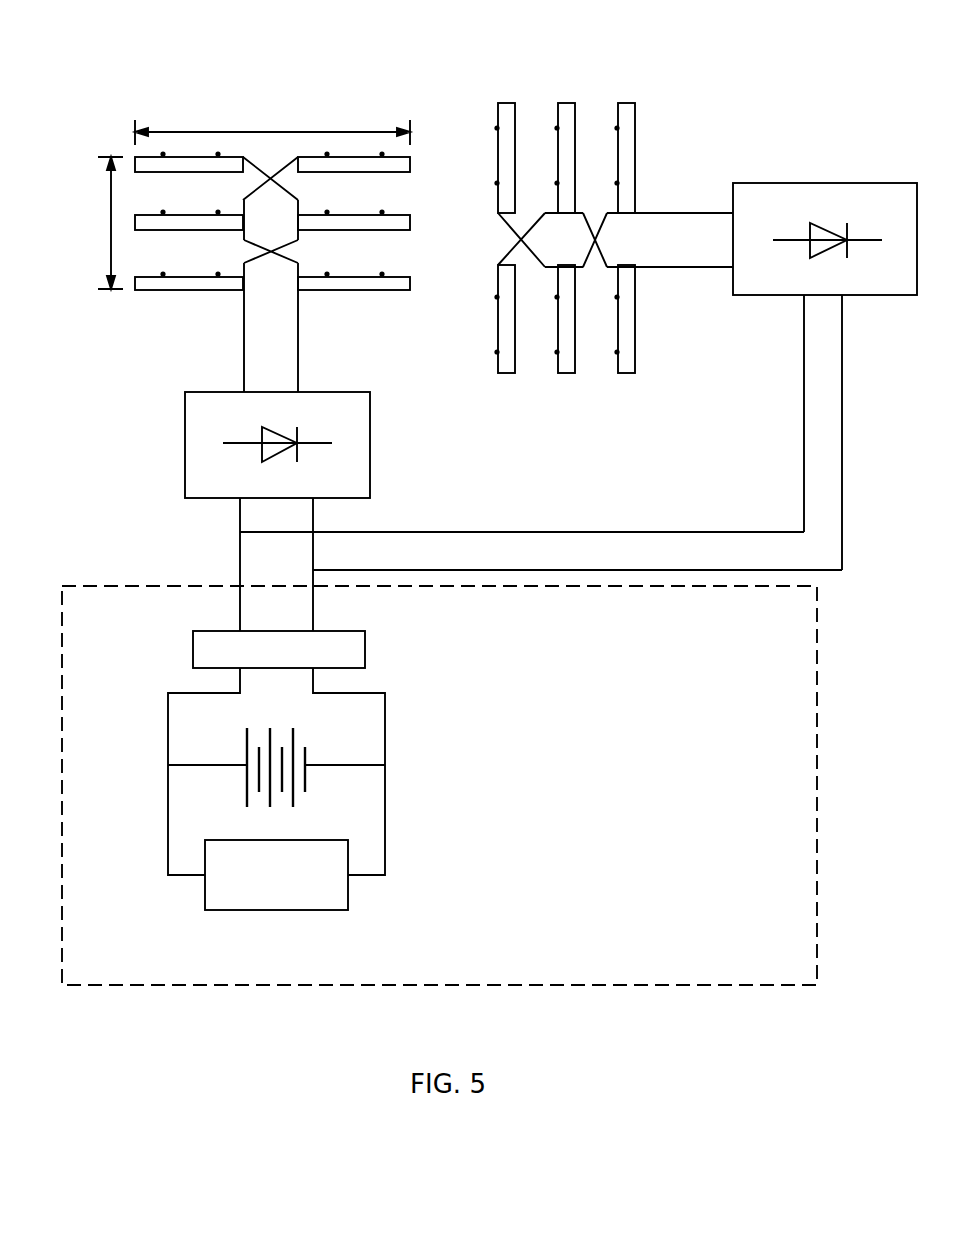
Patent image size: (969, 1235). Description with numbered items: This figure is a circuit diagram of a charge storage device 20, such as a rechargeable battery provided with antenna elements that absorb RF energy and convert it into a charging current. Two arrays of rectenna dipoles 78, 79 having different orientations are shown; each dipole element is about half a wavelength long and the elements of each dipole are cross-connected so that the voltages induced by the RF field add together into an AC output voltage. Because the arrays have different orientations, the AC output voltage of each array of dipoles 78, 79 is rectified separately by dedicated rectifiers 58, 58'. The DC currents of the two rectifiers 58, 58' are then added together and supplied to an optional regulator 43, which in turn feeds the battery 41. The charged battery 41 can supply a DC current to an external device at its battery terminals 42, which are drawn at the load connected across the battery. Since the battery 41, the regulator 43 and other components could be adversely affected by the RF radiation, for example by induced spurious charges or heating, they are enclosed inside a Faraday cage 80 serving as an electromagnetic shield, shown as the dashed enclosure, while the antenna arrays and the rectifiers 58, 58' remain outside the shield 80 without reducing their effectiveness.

The array of dipoles 78 is at (135, 157).
The array of dipoles 79 is at (500, 103).
The bridge rectifier 58 is at (513, 511).
The rectifier 58' is at (825, 337).
The regulator 43 is at (365, 650).
The battery 41 is at (305, 750).
The battery terminals 42 is at (180, 875).
The Faraday cage 80 is at (770, 587).
The charge storage device 20 is at (439, 805).